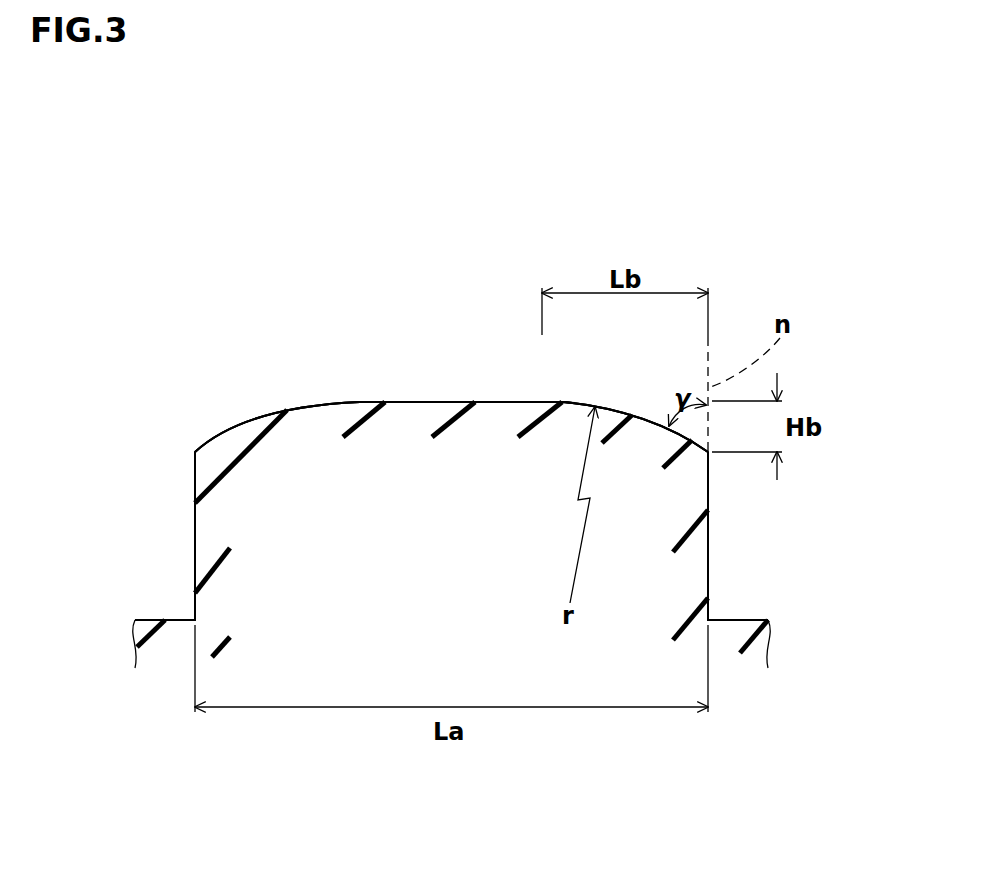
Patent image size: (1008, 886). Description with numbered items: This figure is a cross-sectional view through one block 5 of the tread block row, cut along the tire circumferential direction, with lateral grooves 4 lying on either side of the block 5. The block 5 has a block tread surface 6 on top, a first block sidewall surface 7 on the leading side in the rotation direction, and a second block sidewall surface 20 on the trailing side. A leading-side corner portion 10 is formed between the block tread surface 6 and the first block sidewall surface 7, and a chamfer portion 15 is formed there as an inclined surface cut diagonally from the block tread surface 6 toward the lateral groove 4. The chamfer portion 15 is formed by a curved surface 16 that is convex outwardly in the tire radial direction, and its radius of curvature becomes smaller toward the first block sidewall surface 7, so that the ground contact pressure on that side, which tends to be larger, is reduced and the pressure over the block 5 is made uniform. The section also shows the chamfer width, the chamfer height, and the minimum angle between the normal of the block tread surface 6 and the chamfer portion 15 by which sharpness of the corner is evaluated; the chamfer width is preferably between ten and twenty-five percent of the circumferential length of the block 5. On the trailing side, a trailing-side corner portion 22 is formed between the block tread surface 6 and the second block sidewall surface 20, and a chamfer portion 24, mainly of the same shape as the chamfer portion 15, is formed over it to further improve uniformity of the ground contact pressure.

The lateral groove 4 is at (165, 587).
The block 5 is at (443, 352).
The block tread surface 6 is at (407, 402).
The first block sidewall surface 7 is at (708, 535).
The leading-side corner portion 10 is at (800, 362).
The chamfer portion 15 is at (642, 403).
The curved surface 16 is at (580, 405).
The second block sidewall surface 20 is at (195, 522).
The trailing-side corner portion 22 is at (195, 443).
The chamfer portion 24 is at (240, 423).